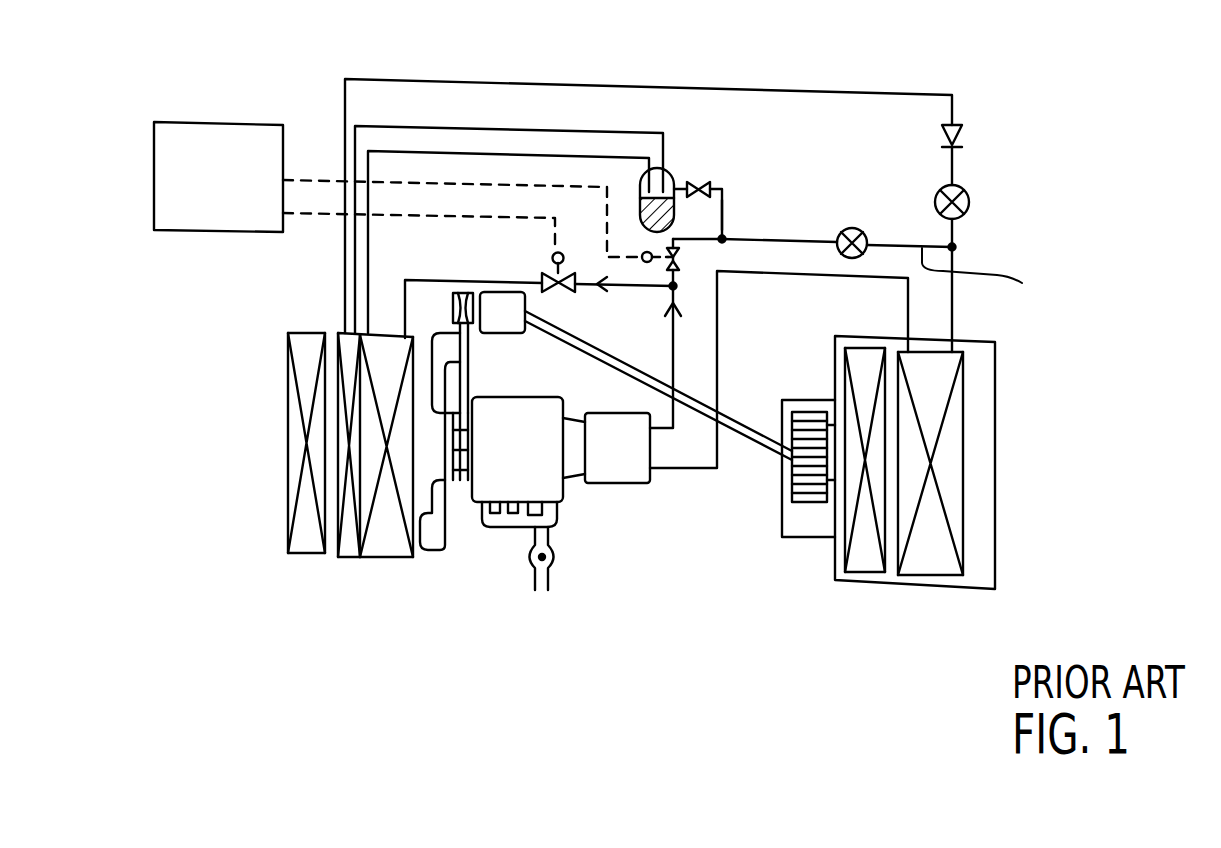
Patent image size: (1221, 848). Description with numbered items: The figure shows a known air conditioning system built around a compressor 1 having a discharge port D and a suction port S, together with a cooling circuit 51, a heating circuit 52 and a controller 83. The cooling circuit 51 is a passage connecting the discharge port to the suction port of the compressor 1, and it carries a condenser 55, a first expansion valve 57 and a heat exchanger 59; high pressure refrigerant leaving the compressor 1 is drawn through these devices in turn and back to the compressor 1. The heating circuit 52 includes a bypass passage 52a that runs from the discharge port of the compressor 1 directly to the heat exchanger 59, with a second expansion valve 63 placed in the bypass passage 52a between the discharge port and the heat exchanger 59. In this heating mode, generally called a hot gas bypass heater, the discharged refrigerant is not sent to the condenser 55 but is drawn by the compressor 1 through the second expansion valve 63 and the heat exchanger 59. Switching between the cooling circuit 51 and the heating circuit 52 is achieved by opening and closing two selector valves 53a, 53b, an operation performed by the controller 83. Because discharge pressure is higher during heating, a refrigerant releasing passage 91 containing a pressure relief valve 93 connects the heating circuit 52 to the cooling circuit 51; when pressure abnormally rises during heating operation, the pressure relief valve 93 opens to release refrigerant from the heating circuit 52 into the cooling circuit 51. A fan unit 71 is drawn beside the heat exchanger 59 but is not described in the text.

The compressor 1 is at (610, 470).
The cooling circuit 51 is at (583, 80).
The heating circuit 52 is at (793, 240).
The bypass passage 52a is at (1011, 281).
The selector valve 53a is at (543, 280).
The selector valve 53b is at (681, 254).
The condenser 55 is at (380, 557).
The first expansion valve 57 is at (968, 198).
The heat exchanger 59 is at (963, 420).
The second expansion valve 63 is at (853, 228).
The fan 71 is at (860, 582).
The controller 83 is at (165, 195).
The refrigerant releasing passage 91 is at (723, 207).
The pressure relief valve 93 is at (694, 183).